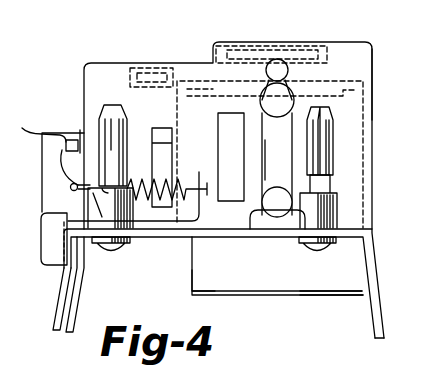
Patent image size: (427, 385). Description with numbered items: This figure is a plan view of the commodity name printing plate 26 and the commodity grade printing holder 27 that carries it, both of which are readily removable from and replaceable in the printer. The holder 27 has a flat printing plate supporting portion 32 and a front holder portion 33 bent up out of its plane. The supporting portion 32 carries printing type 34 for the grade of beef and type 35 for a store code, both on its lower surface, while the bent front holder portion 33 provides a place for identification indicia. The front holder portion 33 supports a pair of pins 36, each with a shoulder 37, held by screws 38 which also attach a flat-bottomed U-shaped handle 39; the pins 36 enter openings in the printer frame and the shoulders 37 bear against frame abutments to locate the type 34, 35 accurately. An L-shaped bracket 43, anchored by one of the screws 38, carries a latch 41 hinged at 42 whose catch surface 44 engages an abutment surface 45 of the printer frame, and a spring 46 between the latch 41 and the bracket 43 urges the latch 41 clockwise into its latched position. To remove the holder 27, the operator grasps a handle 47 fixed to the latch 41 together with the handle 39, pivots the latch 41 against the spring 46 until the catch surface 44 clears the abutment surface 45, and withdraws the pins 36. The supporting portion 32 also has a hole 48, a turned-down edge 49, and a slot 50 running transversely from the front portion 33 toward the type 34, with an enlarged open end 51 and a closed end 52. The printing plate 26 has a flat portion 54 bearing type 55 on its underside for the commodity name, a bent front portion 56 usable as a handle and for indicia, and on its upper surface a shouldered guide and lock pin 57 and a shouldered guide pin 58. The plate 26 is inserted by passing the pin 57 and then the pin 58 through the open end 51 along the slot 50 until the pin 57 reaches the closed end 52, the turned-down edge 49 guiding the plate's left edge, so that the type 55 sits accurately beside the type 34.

The commodity name printing plate 26 is at (277, 266).
The commodity grade printing holder 27 is at (364, 28).
The printing plate supporting portion 32 is at (89, 62).
The front holder portion 33 is at (373, 234).
The printing type 34 is at (285, 44).
The type 35 is at (152, 67).
The pins 36 is at (100, 120).
The shoulder 37 is at (107, 182).
The screws 38 is at (110, 250).
The handle 39 is at (81, 312).
The latch 41 is at (50, 189).
The hinge 42 is at (60, 224).
The L-shaped bracket 43 is at (201, 216).
The catch surface 44 is at (22, 128).
The abutment surface 45 is at (70, 137).
The spring 46 is at (177, 179).
The handle 47 is at (58, 306).
The hole 48 is at (220, 136).
The turned-down edge 49 is at (153, 147).
The slot 50 is at (270, 164).
The enlarged open end 51 is at (272, 232).
The closed end 52 is at (296, 85).
The flat portion 54 is at (190, 286).
The type 55 is at (333, 89).
The front portion 56 is at (322, 298).
The guide and lock pin 57 is at (288, 113).
The guide pin 58 is at (277, 202).